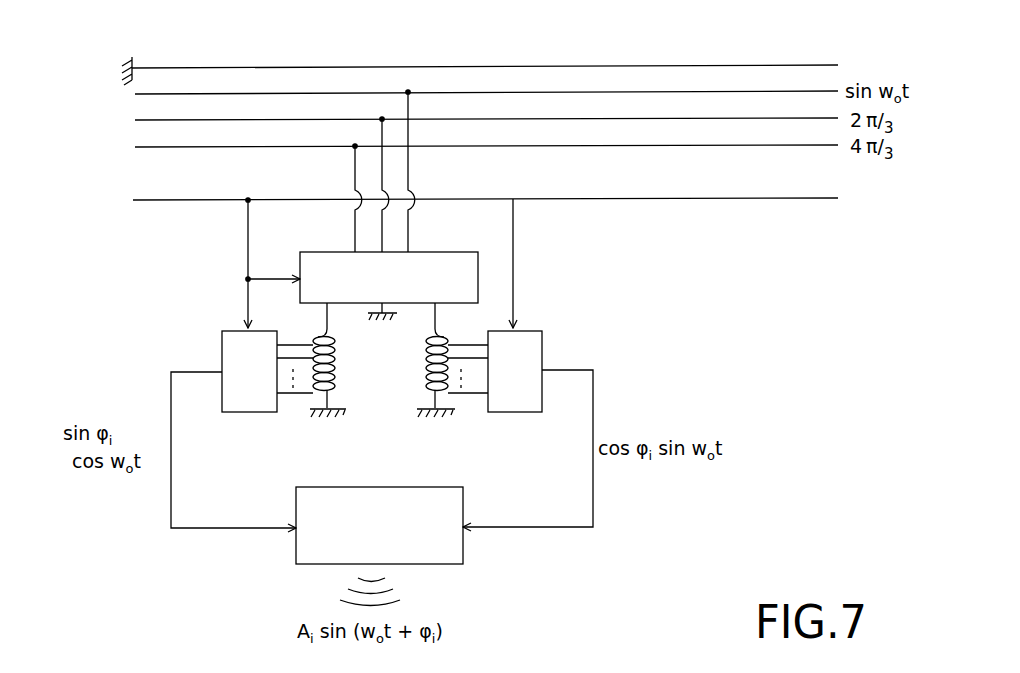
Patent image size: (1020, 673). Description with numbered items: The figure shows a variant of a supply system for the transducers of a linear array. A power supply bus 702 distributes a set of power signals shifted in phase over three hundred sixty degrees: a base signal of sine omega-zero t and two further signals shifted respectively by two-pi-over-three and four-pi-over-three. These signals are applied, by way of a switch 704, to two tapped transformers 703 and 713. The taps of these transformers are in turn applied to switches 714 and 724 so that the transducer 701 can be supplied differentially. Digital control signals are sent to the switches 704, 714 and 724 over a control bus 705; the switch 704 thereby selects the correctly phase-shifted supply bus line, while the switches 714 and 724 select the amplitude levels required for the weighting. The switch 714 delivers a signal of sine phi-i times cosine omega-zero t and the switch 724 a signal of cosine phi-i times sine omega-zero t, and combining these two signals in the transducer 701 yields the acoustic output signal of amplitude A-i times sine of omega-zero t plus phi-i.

The transducer 701 is at (458, 550).
The power supply bus 702 is at (770, 130).
The tapped transformer 703 is at (335, 363).
The switch 704 is at (478, 278).
The control bus 705 is at (172, 200).
The tapped transformer 713 is at (425, 366).
The switch 714 is at (222, 353).
The switch 724 is at (537, 348).